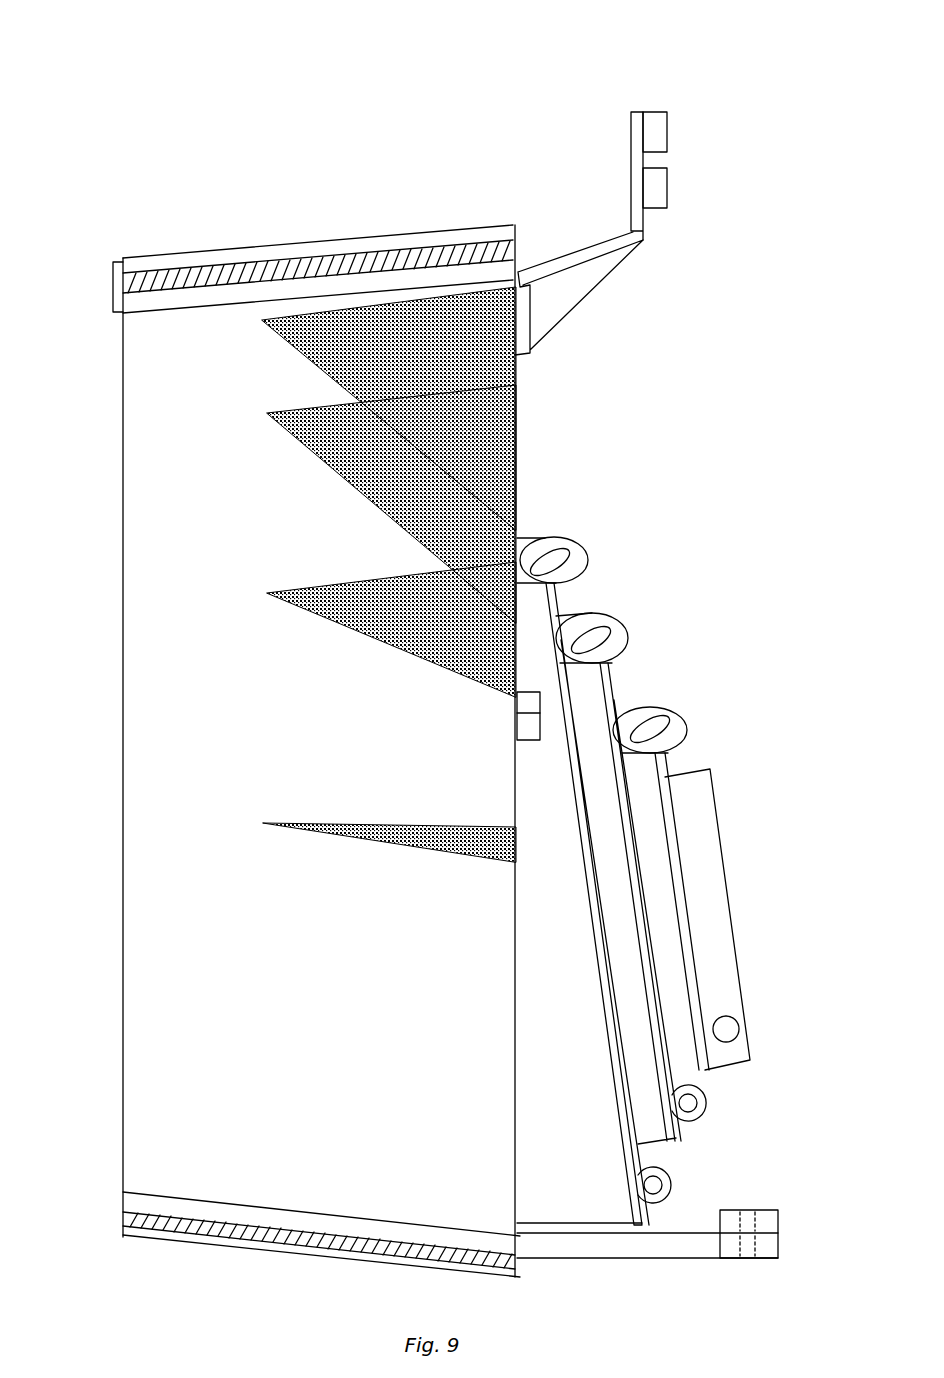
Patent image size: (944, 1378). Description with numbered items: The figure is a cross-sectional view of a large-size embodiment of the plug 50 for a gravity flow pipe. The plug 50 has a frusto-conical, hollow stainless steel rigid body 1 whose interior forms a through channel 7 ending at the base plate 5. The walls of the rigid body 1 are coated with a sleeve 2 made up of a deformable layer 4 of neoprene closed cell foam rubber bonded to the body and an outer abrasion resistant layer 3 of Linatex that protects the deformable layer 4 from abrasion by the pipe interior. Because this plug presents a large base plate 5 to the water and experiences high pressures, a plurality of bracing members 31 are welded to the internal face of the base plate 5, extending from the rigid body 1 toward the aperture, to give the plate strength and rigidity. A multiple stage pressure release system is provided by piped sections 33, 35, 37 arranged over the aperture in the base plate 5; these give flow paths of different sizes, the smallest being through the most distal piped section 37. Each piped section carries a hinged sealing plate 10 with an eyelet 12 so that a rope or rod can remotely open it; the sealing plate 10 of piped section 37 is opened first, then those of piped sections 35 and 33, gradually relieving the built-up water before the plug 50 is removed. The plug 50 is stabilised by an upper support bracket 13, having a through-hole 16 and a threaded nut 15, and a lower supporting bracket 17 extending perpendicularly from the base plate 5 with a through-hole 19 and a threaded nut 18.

The rigid body 1 is at (147, 1192).
The sleeve 2 is at (111, 288).
The abrasion resistant layer 3 is at (225, 262).
The deformable layer 4 is at (372, 292).
The base plate 5 is at (522, 414).
The through channel 7 is at (185, 705).
The sealing plate 10 is at (527, 623).
The eyelet 12 is at (739, 1029).
The upper support bracket 13 is at (608, 213).
The threaded nut 15 is at (667, 132).
The through-hole 16 is at (667, 185).
The lower supporting bracket 17 is at (668, 1258).
The threaded nut 18 is at (745, 1210).
The through-hole 19 is at (755, 1258).
The bracing members 31 is at (318, 362).
The piped section 33 is at (573, 583).
The piped section 35 is at (628, 666).
The piped section 37 is at (672, 812).
The plug 50 is at (820, 116).